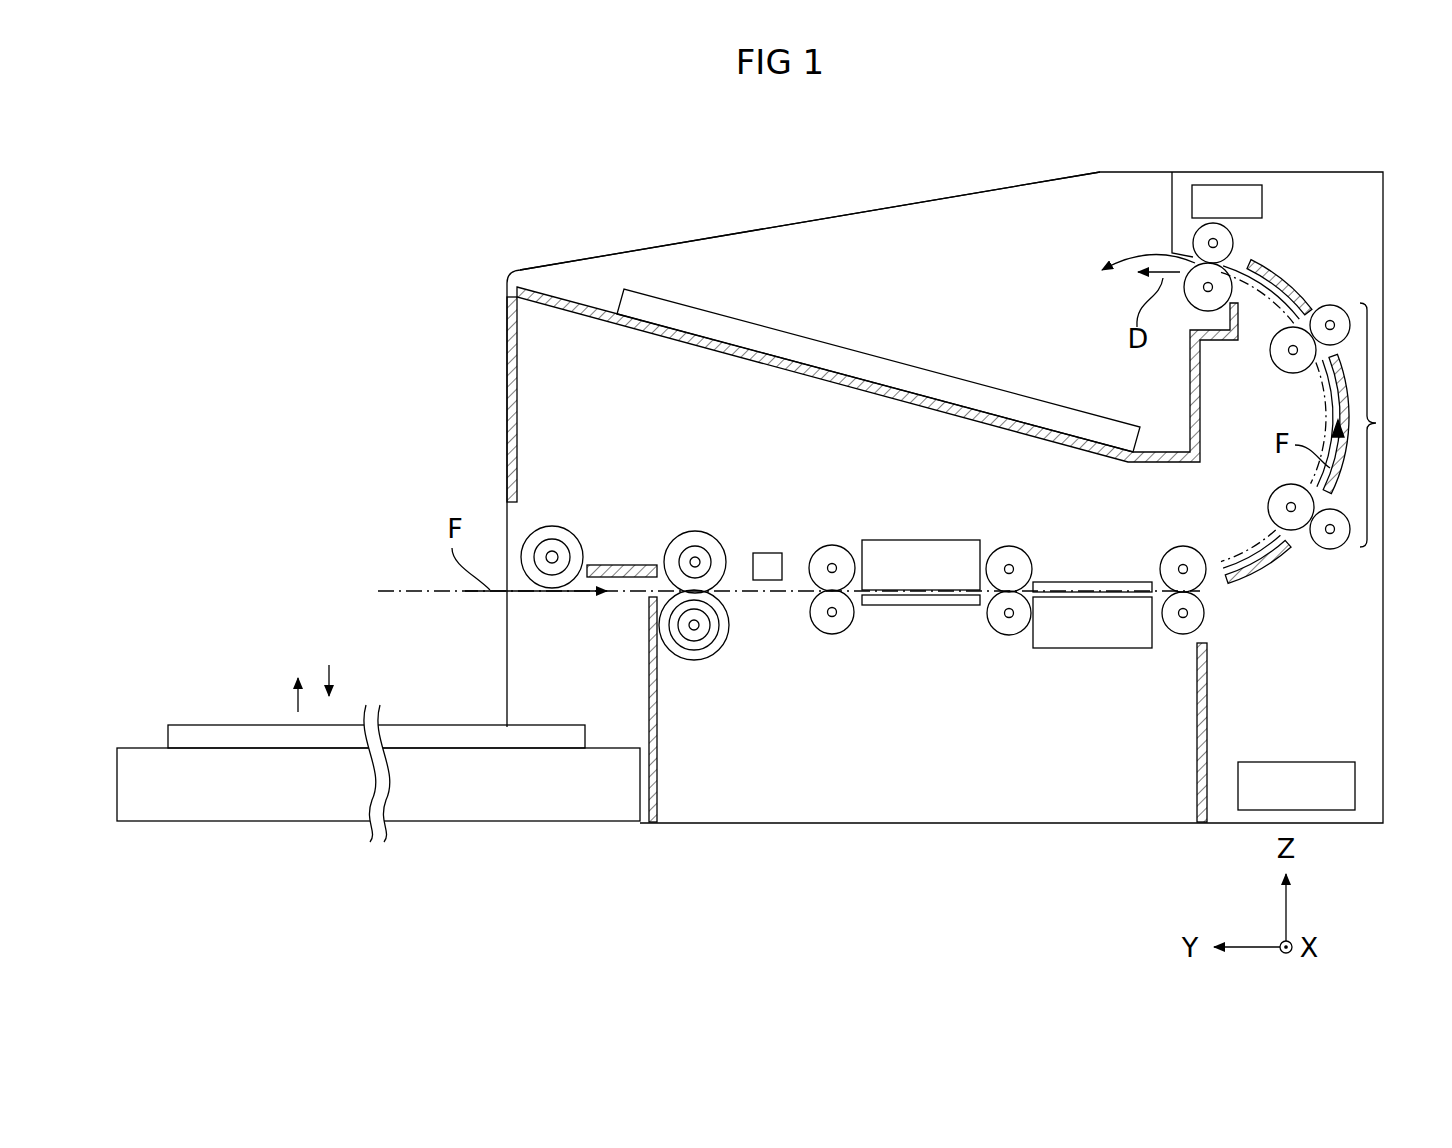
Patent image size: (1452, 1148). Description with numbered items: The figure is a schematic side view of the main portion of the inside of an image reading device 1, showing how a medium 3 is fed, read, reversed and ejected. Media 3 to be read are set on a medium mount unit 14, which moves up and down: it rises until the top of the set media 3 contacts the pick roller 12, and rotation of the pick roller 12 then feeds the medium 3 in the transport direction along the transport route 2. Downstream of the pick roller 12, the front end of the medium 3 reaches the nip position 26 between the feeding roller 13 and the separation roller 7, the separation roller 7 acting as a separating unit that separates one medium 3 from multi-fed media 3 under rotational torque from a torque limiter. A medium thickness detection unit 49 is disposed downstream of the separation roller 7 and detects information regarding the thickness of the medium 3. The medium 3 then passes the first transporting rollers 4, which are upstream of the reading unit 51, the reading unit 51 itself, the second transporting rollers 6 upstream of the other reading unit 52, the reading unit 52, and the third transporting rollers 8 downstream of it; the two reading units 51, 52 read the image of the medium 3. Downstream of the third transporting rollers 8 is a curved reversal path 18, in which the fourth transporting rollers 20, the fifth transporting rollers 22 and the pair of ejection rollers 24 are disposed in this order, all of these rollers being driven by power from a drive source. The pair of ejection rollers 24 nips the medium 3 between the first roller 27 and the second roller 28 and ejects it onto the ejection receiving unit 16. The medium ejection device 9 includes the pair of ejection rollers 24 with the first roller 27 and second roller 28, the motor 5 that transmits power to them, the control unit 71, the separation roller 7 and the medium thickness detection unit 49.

The image reading device 1 is at (1165, 162).
The transport route 2 is at (400, 590).
The medium 3 is at (842, 347).
The first transporting rollers 4 is at (853, 636).
The motor 5 is at (1255, 195).
The second transporting rollers 6 is at (988, 636).
The separation roller 7 is at (683, 661).
The third transporting rollers 8 is at (1175, 636).
The medium ejection device 9 is at (1158, 226).
The pick roller 12 is at (552, 526).
The feeding roller 13 is at (693, 531).
The medium mount unit 14 is at (141, 744).
The ejection receiving unit 16 is at (952, 394).
The curved reversal path 18 is at (1378, 423).
The fourth transporting rollers 20 is at (1323, 551).
The fifth transporting rollers 22 is at (1326, 303).
The pair of ejection rollers 24 is at (1236, 197).
The nip position 26 is at (700, 590).
The first roller 27 is at (1212, 232).
The second roller 28 is at (1222, 283).
The medium thickness detection unit 49 is at (768, 553).
The reading unit 51 is at (915, 545).
The reading unit 52 is at (1095, 648).
The control unit 71 is at (1290, 770).